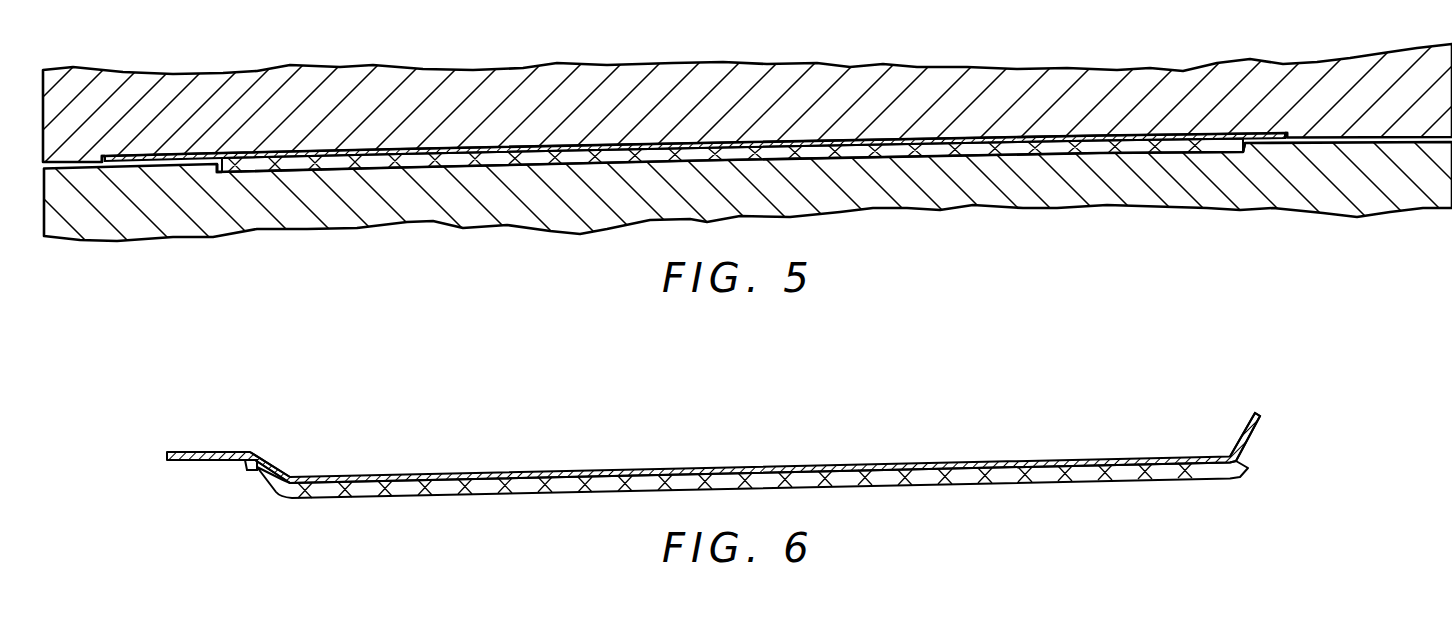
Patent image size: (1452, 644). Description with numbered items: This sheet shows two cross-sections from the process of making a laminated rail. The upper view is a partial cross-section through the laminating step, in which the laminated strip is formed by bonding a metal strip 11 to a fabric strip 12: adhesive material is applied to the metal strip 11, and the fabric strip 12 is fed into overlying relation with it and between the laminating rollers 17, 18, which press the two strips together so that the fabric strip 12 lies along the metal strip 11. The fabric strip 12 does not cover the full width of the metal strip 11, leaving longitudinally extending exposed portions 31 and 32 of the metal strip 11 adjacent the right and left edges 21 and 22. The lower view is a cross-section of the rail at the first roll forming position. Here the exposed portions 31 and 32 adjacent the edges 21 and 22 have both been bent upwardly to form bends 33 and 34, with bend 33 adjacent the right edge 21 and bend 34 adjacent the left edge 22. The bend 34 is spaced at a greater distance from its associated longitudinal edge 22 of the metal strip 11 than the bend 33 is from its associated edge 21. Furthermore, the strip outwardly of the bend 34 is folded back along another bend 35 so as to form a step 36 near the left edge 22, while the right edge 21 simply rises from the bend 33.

In FIG. 5, the metal strip 11 is at (948, 152).
In FIG. 5, the fabric strip 12 is at (885, 153).
In FIG. 5, the laminating roller 17 is at (1176, 82).
In FIG. 5, the laminating roller 18 is at (1188, 200).
In FIG. 5, the exposed portion of the metal strip 31 is at (1281, 133).
In FIG. 5, the exposed portion of the metal strip 32 is at (217, 156).
In FIG. 6, the right edge 21 is at (1258, 416).
In FIG. 6, the left edge 22 is at (167, 458).
In FIG. 6, the bend 33 is at (1230, 458).
In FIG. 6, the bend 34 is at (288, 477).
In FIG. 6, the bend 35 is at (253, 472).
In FIG. 6, the step 36 is at (279, 450).